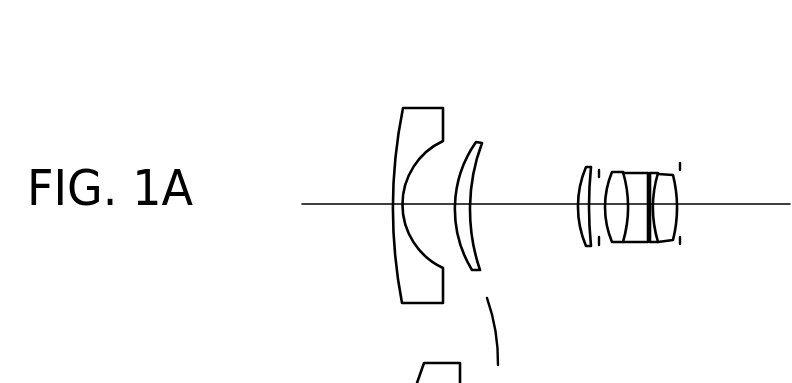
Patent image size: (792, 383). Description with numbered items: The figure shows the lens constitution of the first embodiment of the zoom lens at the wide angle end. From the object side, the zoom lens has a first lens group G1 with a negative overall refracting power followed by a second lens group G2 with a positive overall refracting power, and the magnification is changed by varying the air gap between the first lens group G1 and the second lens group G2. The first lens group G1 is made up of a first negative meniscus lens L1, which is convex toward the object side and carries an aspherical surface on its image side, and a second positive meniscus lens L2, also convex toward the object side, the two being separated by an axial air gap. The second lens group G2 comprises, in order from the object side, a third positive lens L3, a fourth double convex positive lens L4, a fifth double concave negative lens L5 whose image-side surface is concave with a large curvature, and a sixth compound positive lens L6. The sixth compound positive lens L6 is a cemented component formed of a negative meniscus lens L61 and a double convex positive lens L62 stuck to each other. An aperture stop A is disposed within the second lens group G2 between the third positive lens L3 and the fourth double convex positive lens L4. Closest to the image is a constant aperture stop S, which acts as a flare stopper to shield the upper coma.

The first lens group G1 is at (507, 53).
The second lens group G2 is at (713, 83).
The first negative meniscus lens L1 is at (423, 121).
The second positive meniscus lens L2 is at (477, 141).
The third positive lens L3 is at (583, 165).
The fourth double convex positive lens L4 is at (617, 168).
The fifth double concave negative lens L5 is at (636, 171).
The sixth compound positive lens L6 is at (670, 172).
The negative meniscus lens L61 is at (655, 243).
The double convex positive lens L62 is at (665, 217).
The aperture stop A is at (600, 169).
The constant aperture stop S is at (690, 167).